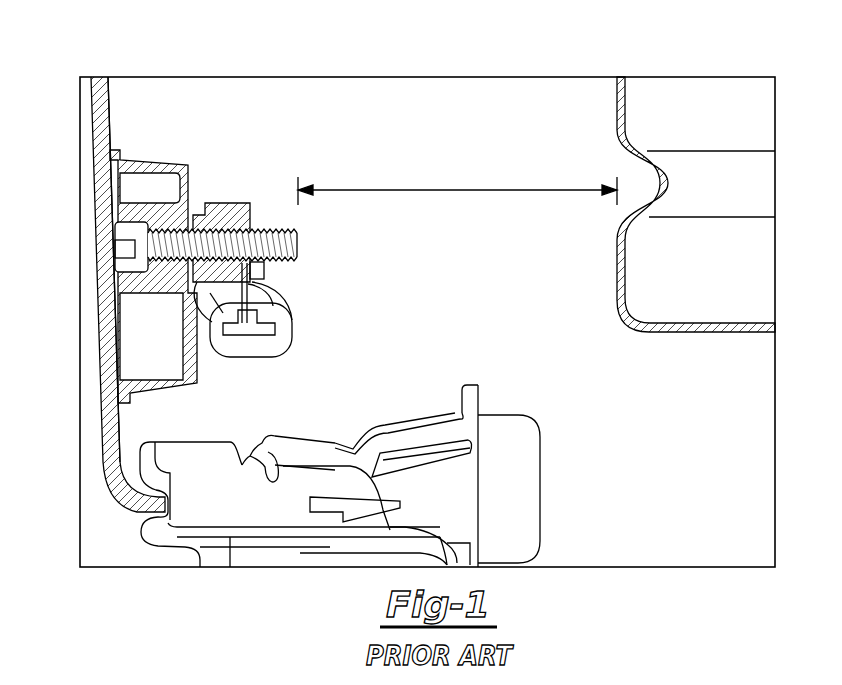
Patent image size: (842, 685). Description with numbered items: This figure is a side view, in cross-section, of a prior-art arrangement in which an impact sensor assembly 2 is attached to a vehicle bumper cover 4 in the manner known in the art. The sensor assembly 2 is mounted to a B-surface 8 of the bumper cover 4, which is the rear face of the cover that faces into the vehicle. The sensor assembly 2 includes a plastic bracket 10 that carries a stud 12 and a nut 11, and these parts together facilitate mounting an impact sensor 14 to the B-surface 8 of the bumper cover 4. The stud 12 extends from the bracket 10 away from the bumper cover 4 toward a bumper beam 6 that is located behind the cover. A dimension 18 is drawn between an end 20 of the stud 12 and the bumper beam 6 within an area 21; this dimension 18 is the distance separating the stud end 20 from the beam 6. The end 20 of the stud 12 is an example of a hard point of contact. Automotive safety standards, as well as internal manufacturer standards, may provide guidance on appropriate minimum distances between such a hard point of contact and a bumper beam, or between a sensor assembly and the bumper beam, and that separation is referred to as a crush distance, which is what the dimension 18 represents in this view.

The impact sensor assembly 2 is at (200, 252).
The vehicle bumper cover 4 is at (130, 256).
The bumper beam 6 is at (687, 92).
The B-surface 8 is at (110, 108).
The plastic bracket 10 is at (157, 162).
The nut 11 is at (250, 203).
The stud 12 is at (150, 222).
The impact sensor 14 is at (285, 337).
The dimension 18 is at (453, 189).
The end of the stud 20 is at (298, 242).
The area 21 is at (513, 144).